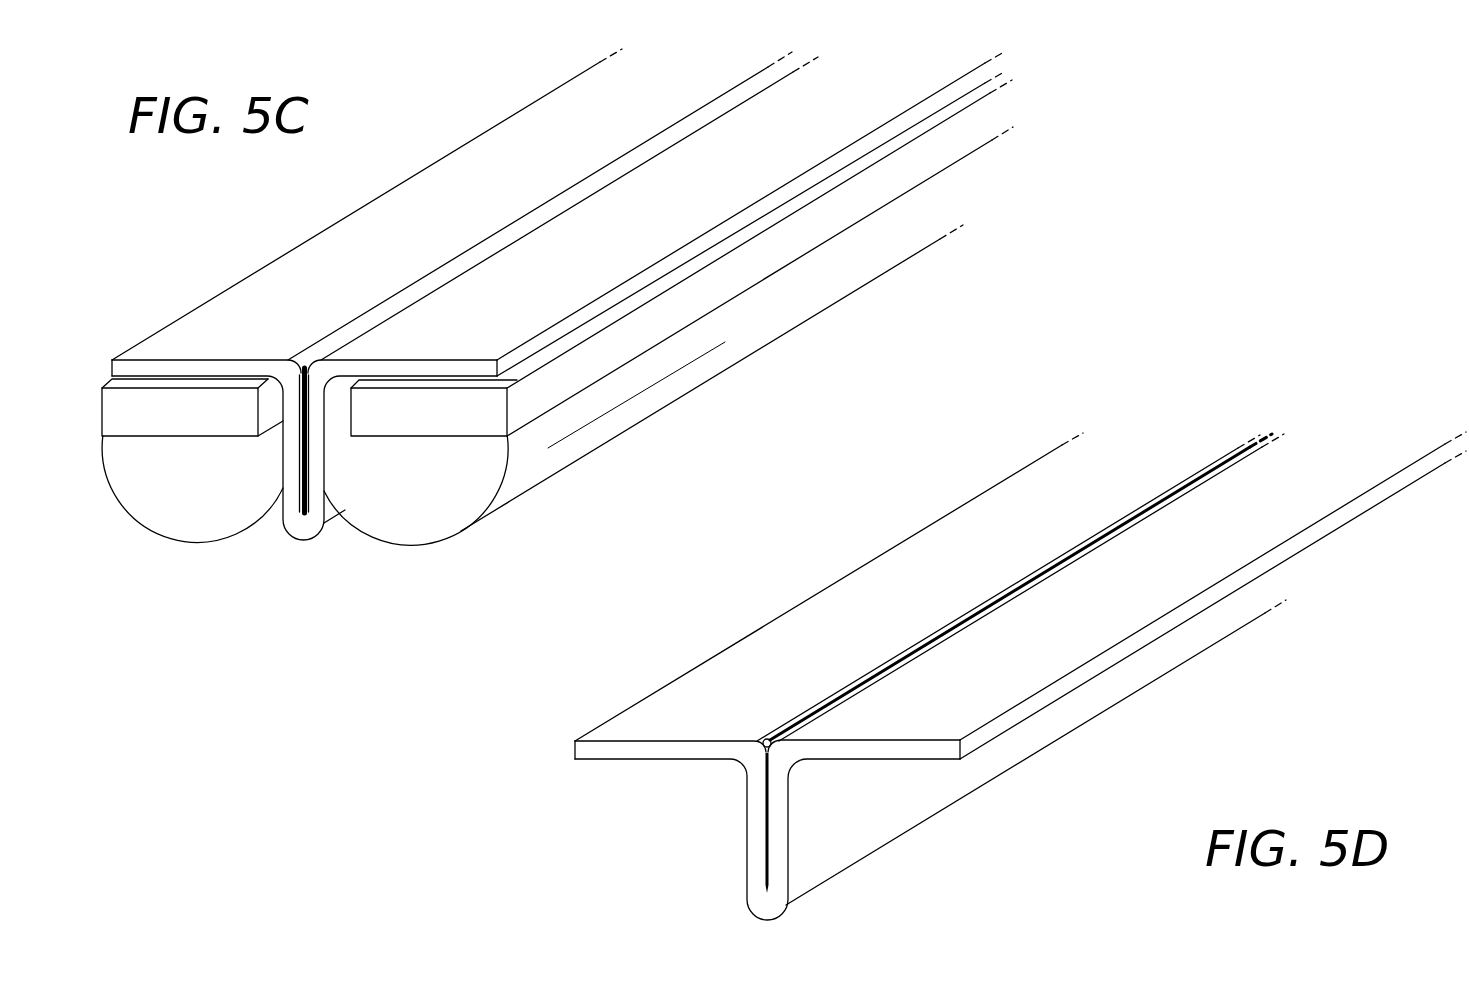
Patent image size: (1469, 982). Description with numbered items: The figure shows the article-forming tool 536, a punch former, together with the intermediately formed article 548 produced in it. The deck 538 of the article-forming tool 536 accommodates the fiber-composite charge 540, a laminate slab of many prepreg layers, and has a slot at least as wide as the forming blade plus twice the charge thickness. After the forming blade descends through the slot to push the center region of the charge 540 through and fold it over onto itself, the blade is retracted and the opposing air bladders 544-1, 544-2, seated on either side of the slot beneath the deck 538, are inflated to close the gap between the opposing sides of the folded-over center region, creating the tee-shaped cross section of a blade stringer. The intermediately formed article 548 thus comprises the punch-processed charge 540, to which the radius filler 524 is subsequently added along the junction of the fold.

In FIG. 5C, the article-forming tool 536 is at (1062, 156).
In FIG. 5C, the deck 538 is at (199, 423).
In FIG. 5C, the fiber-composite charge 540 is at (293, 323).
In FIG. 5D, the fiber-composite charge 540 is at (798, 681).
In FIG. 5C, the air bladder 544-1 is at (219, 484).
In FIG. 5C, the air bladder 544-2 is at (441, 484).
In FIG. 5D, the radius filler 524 is at (1022, 582).
In FIG. 5D, the intermediately formed article 548 is at (616, 828).